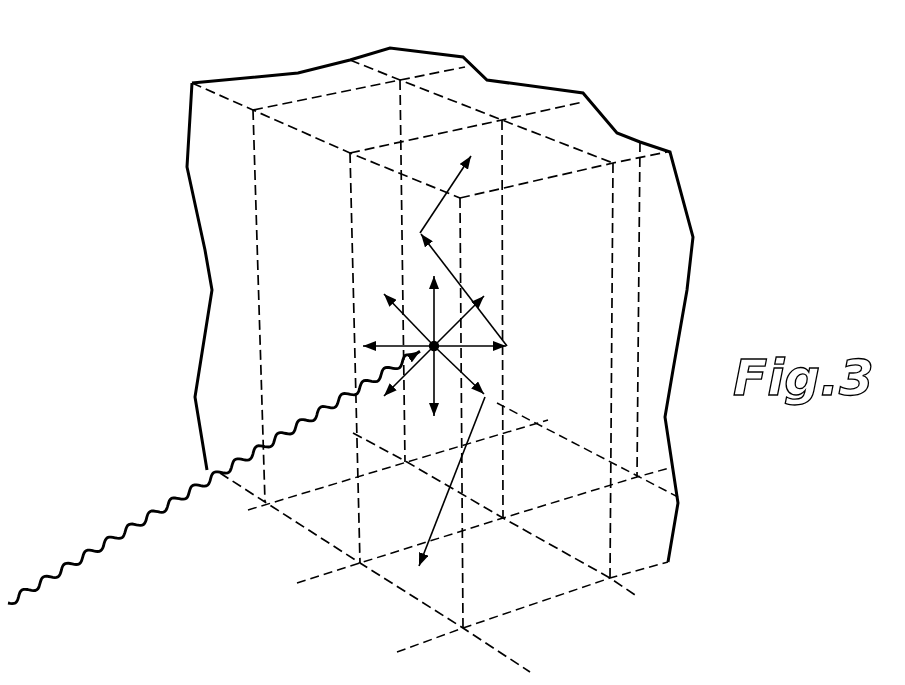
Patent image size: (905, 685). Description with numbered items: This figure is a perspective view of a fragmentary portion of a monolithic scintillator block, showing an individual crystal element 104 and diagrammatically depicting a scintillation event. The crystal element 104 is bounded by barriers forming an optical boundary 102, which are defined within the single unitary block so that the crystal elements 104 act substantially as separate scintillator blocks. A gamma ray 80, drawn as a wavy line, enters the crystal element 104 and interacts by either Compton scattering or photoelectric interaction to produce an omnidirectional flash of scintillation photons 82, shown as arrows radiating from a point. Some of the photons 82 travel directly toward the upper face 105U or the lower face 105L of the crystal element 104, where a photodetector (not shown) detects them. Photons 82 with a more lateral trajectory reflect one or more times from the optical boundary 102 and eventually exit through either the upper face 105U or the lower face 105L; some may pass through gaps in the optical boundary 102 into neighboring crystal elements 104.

The gamma ray 80 is at (134, 518).
The scintillation photons 82 is at (395, 310).
The optical boundary 102 is at (438, 597).
The crystal element 104 is at (583, 287).
The upper face 105U is at (541, 151).
The lower face 105L is at (500, 587).